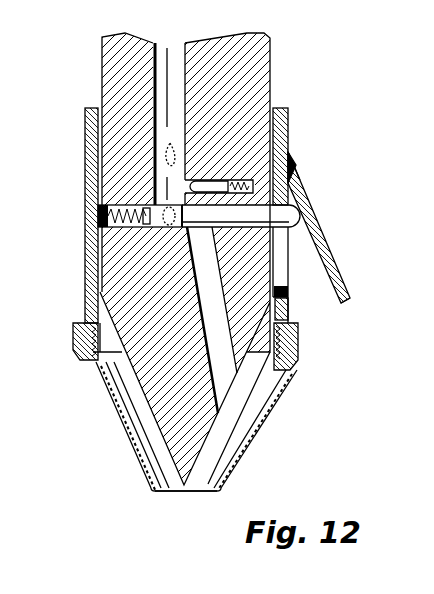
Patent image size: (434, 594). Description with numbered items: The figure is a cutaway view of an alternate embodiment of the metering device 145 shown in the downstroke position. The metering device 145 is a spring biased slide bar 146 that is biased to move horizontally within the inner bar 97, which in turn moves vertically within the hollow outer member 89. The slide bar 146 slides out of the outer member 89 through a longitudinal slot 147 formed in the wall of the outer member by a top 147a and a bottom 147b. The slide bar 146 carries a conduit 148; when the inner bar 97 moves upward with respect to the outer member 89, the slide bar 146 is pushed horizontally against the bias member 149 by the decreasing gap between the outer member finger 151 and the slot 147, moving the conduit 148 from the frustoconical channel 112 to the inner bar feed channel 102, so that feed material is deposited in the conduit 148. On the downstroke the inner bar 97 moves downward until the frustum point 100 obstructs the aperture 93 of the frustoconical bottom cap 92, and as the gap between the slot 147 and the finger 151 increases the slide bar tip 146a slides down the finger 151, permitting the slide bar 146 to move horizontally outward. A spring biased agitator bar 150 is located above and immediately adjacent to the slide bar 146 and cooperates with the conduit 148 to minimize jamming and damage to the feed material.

The inner bar 97 is at (279, 55).
The inner bar feed channel 102 is at (175, 80).
The hollow outer member 89 is at (289, 118).
The spring biased agitator bar 150 is at (213, 177).
The slot top 147a is at (288, 180).
The slide bar tip 146a is at (302, 209).
The outer member finger 151 is at (320, 233).
The slide bar 146 is at (250, 242).
The longitudinal slot 147 is at (275, 291).
The slot bottom 147b is at (286, 301).
The frustoconical channel 112 is at (289, 314).
The conduit 148 is at (155, 196).
The metering device 145 is at (82, 215).
The bias member 149 is at (138, 227).
The frustum point 100 is at (154, 435).
The bottom cap 92 is at (252, 428).
The aperture 93 is at (175, 499).